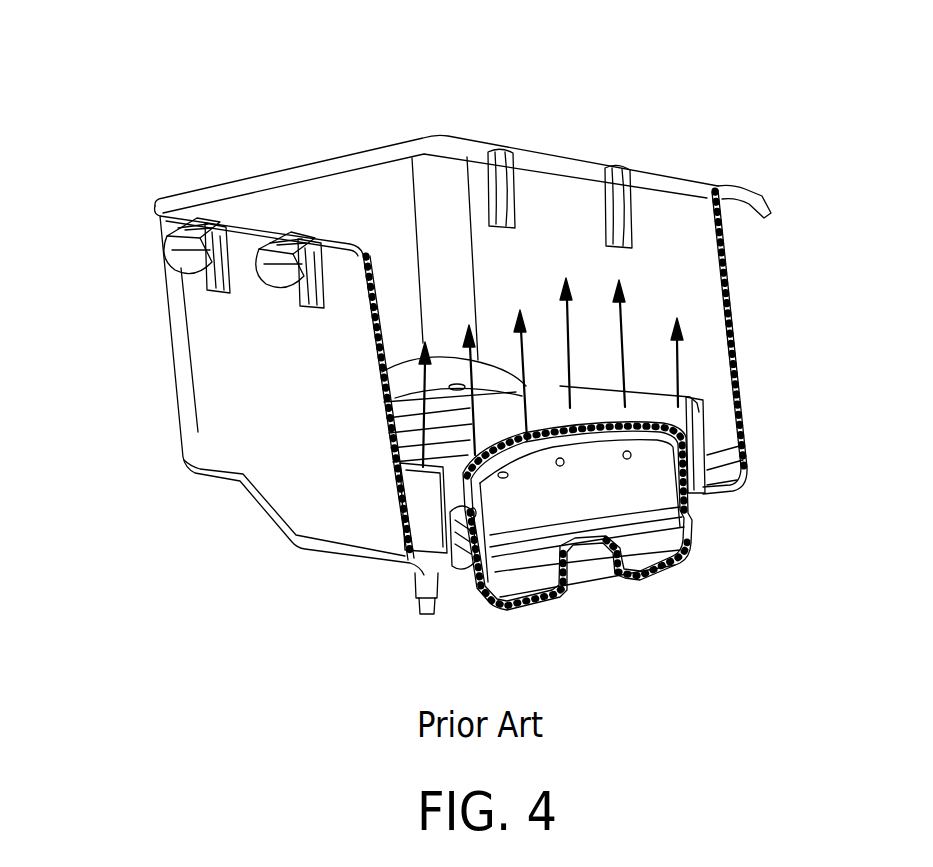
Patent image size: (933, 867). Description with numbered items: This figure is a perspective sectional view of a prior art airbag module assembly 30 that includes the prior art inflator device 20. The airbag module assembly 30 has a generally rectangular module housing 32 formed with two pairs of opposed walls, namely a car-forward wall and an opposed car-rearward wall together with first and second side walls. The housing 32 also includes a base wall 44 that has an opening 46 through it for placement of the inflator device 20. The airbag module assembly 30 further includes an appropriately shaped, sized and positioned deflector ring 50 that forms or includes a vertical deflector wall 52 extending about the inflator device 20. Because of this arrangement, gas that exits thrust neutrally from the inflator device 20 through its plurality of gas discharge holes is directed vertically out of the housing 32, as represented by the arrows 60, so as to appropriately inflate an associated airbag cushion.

The airbag module assembly 30 is at (792, 172).
The module housing 32 is at (265, 444).
The base wall 44 is at (727, 493).
The opening 46 is at (467, 553).
The deflector ring 50 is at (643, 412).
The vertical deflector wall 52 is at (707, 455).
The arrows 60 is at (688, 334).
The inflator device 20 is at (652, 545).